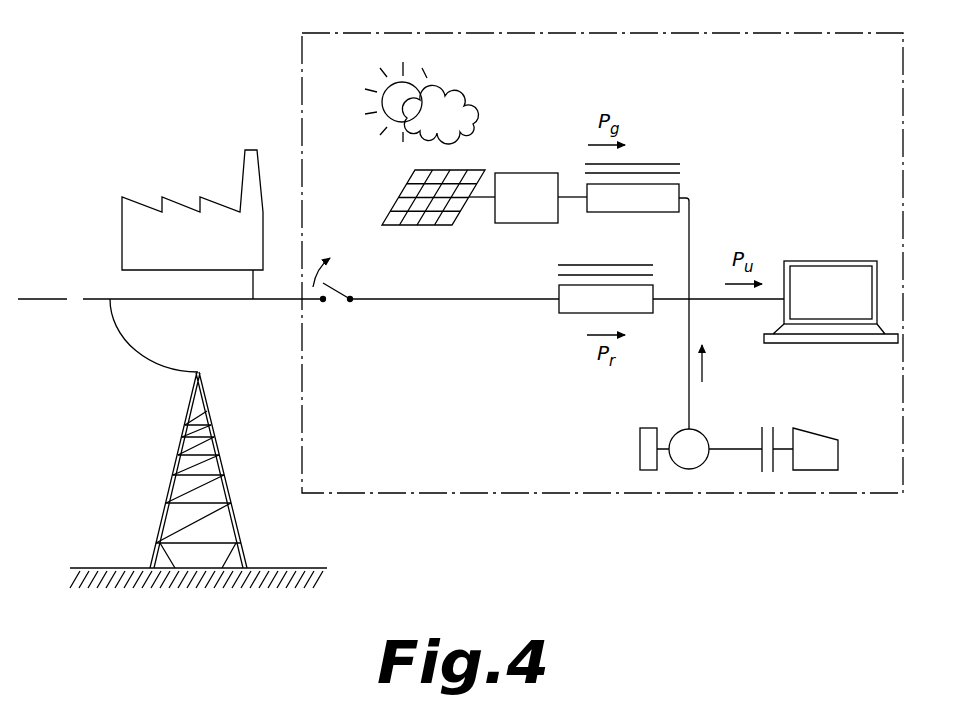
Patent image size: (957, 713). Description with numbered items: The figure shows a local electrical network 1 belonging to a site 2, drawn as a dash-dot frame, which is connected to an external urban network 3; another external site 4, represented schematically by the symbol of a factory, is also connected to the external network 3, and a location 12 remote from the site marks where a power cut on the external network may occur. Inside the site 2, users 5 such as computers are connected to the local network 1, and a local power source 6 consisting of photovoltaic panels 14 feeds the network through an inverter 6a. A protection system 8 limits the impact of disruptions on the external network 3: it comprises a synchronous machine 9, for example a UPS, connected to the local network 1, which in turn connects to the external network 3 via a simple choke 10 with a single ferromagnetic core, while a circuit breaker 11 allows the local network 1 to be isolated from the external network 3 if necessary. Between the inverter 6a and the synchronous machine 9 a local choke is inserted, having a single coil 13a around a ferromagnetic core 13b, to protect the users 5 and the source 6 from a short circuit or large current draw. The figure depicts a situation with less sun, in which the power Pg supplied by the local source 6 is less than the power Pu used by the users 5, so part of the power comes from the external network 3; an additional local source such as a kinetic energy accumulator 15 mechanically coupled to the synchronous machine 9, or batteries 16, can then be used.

The local network 1 is at (690, 237).
The site 2 is at (838, 33).
The external urban network 3 is at (225, 300).
The external site 4 is at (183, 223).
The users 5 is at (827, 329).
The local power source 6 is at (490, 149).
The inverter 6a is at (518, 173).
The protection system 8 is at (522, 350).
The synchronous machine 9 is at (689, 457).
The choke 10 is at (561, 305).
The circuit breaker 11 is at (336, 285).
The location 12 is at (73, 296).
The coil 13a is at (657, 163).
The ferromagnetic core 13b is at (613, 207).
The photovoltaic panels 14 is at (410, 187).
The kinetic energy accumulator 15 is at (640, 432).
The batteries 16 is at (771, 484).